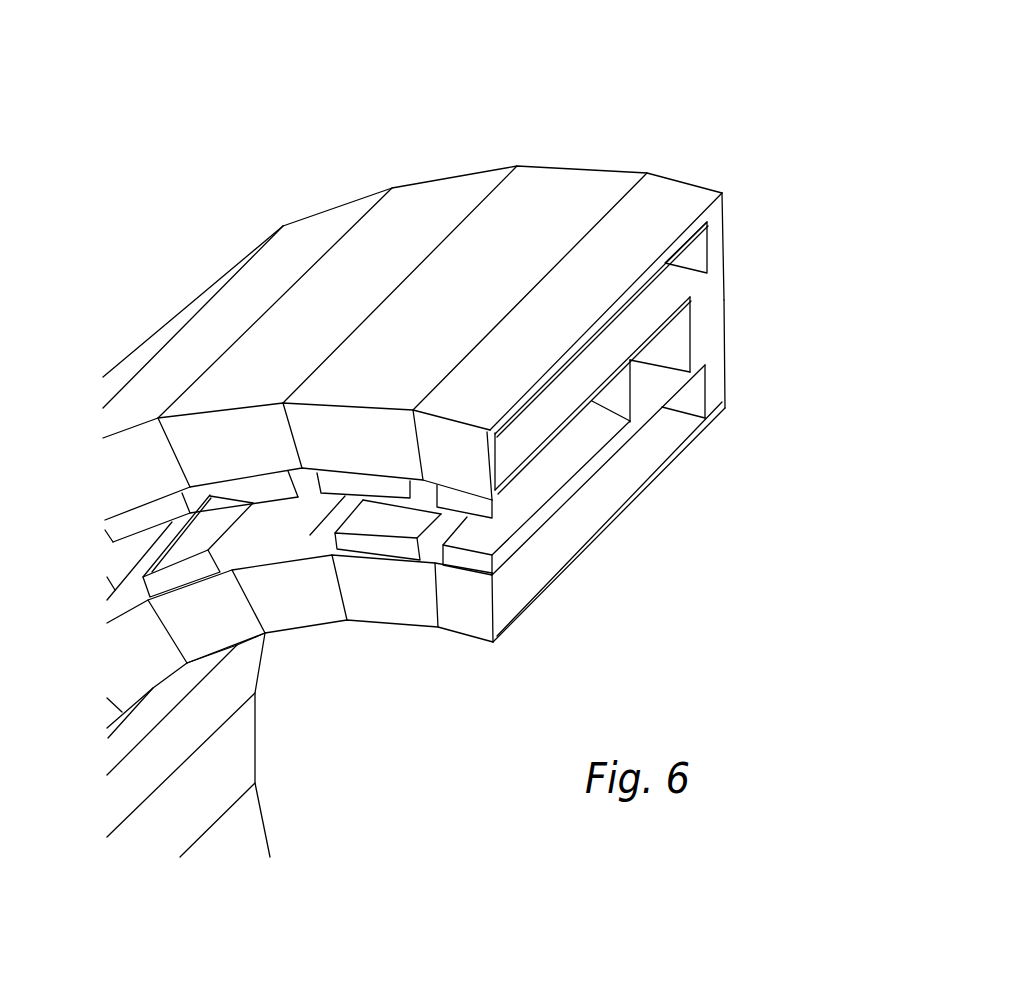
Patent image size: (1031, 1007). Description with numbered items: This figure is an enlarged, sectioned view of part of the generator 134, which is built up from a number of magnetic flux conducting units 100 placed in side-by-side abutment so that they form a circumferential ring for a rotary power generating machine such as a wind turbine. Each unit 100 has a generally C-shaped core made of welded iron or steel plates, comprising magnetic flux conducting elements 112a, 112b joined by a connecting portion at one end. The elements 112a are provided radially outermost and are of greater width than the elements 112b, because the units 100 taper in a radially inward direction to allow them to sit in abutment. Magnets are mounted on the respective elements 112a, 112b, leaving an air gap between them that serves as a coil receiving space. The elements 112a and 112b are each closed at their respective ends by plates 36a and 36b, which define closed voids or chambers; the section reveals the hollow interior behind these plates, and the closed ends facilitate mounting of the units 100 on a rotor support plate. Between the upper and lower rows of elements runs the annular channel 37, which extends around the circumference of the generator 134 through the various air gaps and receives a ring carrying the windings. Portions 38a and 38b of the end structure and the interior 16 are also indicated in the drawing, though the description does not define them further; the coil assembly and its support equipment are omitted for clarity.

The generator 134 is at (905, 348).
The magnetic flux conducting unit 100 is at (443, 189).
The magnetic flux conducting element 112a is at (400, 192).
The plate 36a is at (255, 459).
The plate 36b is at (316, 603).
The magnetic flux conducting element 112b is at (297, 628).
The annular channel 37 is at (502, 524).
The upper frame 38a is at (738, 226).
The lower frame 38b is at (738, 386).
The compartment 16 is at (612, 362).